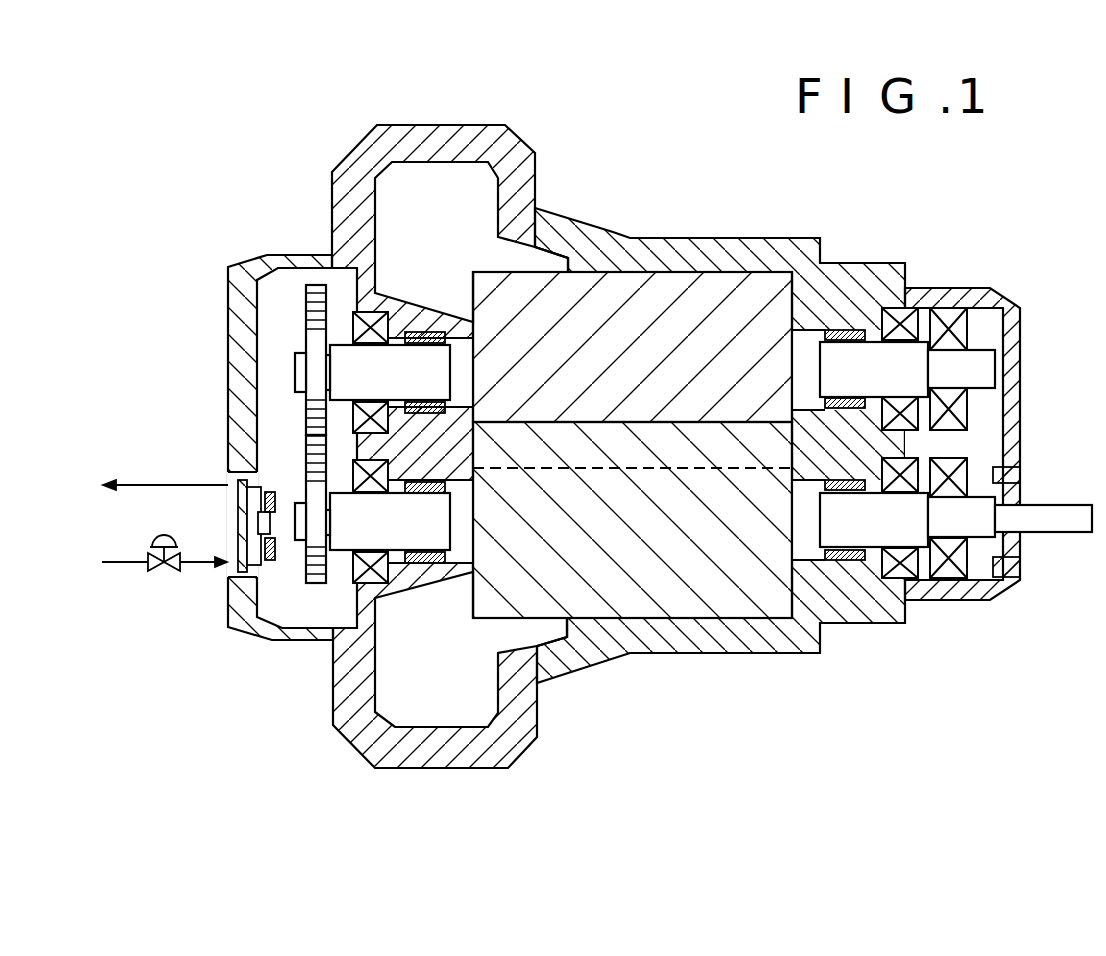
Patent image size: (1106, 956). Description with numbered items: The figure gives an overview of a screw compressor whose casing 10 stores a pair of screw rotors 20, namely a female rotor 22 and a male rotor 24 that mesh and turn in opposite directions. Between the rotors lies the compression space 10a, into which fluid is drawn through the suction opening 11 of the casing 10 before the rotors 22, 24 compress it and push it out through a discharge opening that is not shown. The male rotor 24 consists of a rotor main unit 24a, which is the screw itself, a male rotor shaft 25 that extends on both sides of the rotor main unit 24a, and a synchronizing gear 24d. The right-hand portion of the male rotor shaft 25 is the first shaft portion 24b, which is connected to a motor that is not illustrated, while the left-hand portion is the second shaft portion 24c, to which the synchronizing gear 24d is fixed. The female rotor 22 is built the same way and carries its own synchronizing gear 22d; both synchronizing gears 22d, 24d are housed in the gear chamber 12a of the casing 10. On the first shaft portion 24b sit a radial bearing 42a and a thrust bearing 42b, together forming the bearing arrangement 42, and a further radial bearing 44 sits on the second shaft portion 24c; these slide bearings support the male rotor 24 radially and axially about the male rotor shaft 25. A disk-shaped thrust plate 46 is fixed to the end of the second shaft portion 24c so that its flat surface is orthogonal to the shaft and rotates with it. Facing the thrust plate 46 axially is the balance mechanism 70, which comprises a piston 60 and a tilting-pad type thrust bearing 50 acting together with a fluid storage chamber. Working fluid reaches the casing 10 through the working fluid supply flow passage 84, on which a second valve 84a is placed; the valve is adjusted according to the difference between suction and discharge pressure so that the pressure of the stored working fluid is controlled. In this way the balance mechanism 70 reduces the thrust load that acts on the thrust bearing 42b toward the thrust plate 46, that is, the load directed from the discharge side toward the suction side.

The casing 10 is at (432, 424).
The suction opening 11 is at (438, 190).
The compression space 10a is at (628, 440).
The gear chamber 12a is at (260, 430).
The pair of screw rotors 20 is at (632, 425).
The female rotor 22 is at (705, 352).
The male rotor 24 is at (632, 447).
The synchronizing gear 22d is at (313, 323).
The synchronizing gear 24d is at (313, 473).
The rotor main unit 24a is at (677, 572).
The first shaft portion 24b is at (990, 580).
The second shaft portion 24c is at (410, 530).
The male rotor shaft 25 is at (682, 645).
The bearing 42 is at (941, 516).
The radial bearing 42a is at (900, 575).
The thrust bearing 42b is at (950, 575).
The radial bearing 44 is at (355, 582).
The thrust plate 46 is at (272, 555).
The thrust bearing 50 is at (255, 545).
The piston 60 is at (240, 555).
The balance mechanism 70 is at (230, 608).
The working fluid supply flow passage 84 is at (155, 525).
The second valve 84a is at (156, 538).